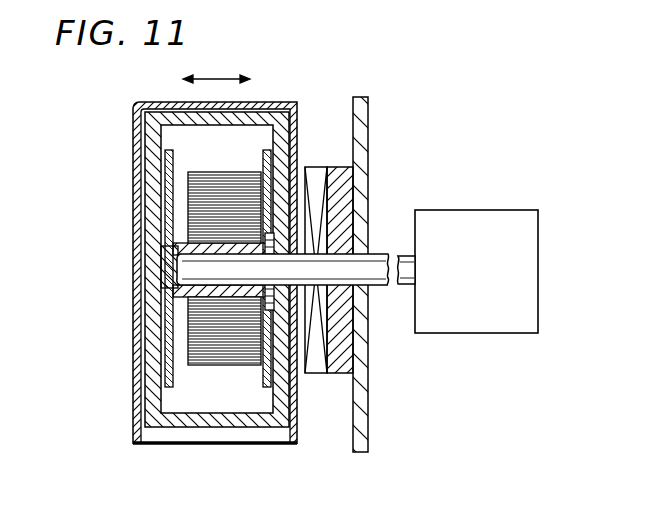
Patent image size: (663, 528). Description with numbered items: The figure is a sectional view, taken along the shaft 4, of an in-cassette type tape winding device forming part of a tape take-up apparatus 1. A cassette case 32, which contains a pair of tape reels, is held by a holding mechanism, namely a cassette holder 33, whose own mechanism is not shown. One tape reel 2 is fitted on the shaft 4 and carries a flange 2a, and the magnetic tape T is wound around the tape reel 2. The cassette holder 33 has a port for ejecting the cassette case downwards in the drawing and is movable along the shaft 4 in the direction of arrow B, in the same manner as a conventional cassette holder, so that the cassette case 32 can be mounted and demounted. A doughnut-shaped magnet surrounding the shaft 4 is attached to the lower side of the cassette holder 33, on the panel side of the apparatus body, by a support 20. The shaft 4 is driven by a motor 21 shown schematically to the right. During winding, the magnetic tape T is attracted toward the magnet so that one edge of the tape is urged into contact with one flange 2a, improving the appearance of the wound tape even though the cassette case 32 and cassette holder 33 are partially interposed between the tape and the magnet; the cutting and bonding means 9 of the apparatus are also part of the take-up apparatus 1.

The take-up apparatus 1 is at (353, 424).
The tape reel 2 is at (172, 389).
The flange 2a is at (265, 386).
The shaft 4 is at (374, 254).
The cutting and bonding means 9 is at (313, 374).
The support 20 is at (347, 353).
The motor 21 is at (479, 220).
The cassette case 32 is at (155, 422).
The cassette holder 33 is at (160, 447).
The magnetic tape T is at (217, 367).
The direction of arrow B is at (216, 70).